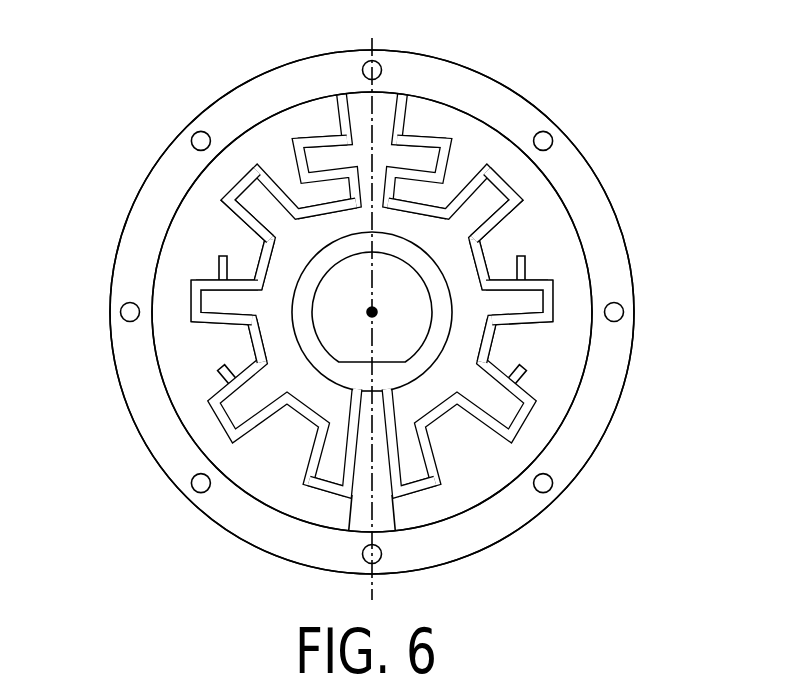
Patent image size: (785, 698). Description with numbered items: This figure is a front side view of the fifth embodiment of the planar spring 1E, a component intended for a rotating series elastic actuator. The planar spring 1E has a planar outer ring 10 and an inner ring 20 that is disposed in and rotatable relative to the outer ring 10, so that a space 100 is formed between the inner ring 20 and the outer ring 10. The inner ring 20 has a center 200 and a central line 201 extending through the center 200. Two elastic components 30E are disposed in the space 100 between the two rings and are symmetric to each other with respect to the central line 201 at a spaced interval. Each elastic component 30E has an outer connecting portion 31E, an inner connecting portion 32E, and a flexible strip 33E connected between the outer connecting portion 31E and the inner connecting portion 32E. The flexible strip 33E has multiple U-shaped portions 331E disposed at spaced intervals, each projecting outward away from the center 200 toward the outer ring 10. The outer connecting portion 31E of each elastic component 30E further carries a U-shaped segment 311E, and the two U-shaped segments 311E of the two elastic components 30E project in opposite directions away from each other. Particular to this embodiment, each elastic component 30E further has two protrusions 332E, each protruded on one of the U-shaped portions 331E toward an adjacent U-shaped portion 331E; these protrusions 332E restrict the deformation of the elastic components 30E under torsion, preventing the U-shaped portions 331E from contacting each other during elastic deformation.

The planar spring 1E is at (574, 113).
The outer ring 10 is at (237, 110).
The space 100 is at (215, 357).
The inner ring 20 is at (322, 364).
The center 200 is at (366, 316).
The central line 201 is at (370, 48).
The elastic component 30E is at (207, 222).
The outer connecting portion 31E is at (408, 111).
The U-shaped segment 311E is at (452, 156).
The inner connecting portion 32E is at (390, 463).
The flexible strip 33E is at (560, 275).
The U-shaped portion 331E is at (513, 194).
The protrusion 332E is at (522, 258).